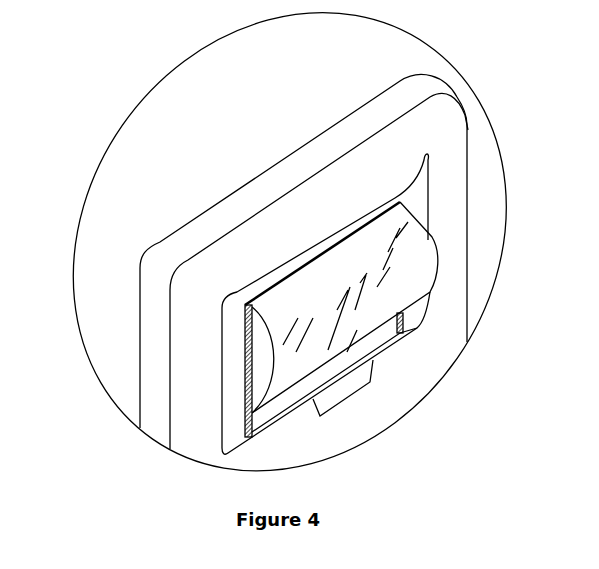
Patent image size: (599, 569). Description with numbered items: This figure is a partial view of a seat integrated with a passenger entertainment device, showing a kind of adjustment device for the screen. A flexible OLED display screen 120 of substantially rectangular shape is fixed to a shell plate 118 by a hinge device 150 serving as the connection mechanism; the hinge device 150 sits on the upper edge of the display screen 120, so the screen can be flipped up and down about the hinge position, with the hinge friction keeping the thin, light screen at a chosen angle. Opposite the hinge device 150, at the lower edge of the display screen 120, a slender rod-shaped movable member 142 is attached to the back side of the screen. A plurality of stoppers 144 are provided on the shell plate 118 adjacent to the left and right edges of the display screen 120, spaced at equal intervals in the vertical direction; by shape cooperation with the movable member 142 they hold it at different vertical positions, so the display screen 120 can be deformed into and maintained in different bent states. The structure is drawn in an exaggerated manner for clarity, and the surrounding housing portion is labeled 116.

The housing 116 is at (197, 340).
The shell plate 118 is at (186, 252).
The flexible OLED display screen 120 is at (422, 238).
The movable member 142 is at (247, 420).
The stoppers 144 is at (247, 365).
The hinge device 150 is at (340, 240).